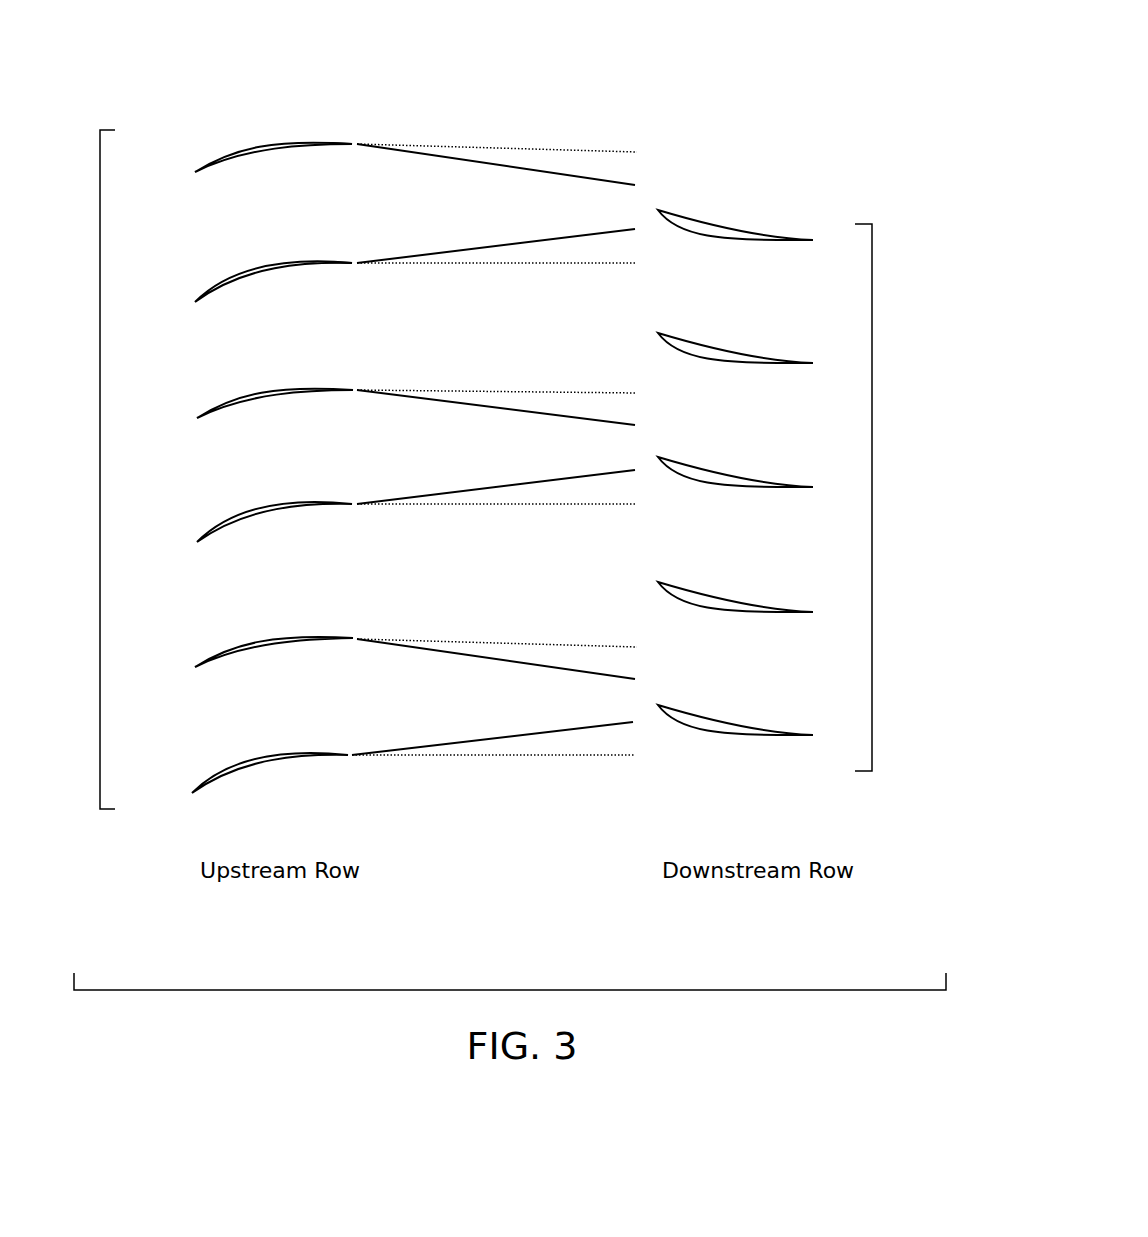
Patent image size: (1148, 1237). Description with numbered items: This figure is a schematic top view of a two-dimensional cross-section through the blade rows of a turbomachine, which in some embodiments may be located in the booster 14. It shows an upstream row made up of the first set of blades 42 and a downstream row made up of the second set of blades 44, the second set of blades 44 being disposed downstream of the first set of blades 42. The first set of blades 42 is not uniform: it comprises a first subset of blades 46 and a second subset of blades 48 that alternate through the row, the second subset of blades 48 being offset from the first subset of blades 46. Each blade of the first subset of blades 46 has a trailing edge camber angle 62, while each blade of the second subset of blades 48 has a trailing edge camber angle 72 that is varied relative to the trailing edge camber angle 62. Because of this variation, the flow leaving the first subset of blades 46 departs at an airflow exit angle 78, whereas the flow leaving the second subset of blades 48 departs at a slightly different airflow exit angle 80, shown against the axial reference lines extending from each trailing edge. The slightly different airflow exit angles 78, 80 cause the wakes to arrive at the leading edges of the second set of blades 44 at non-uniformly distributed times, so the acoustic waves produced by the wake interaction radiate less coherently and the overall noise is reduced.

The booster 14 is at (806, 44).
The first set of blades 42 is at (100, 472).
The second set of blades 44 is at (872, 498).
The first subset of blades 46 is at (228, 157).
The second subset of blades 48 is at (215, 283).
The trailing edge camber angle of the first subset of blades 62 is at (352, 141).
The trailing edge camber angle of the second subset of blades 72 is at (352, 260).
The airflow exit angle 78 is at (458, 155).
The airflow exit angle 80 is at (458, 263).